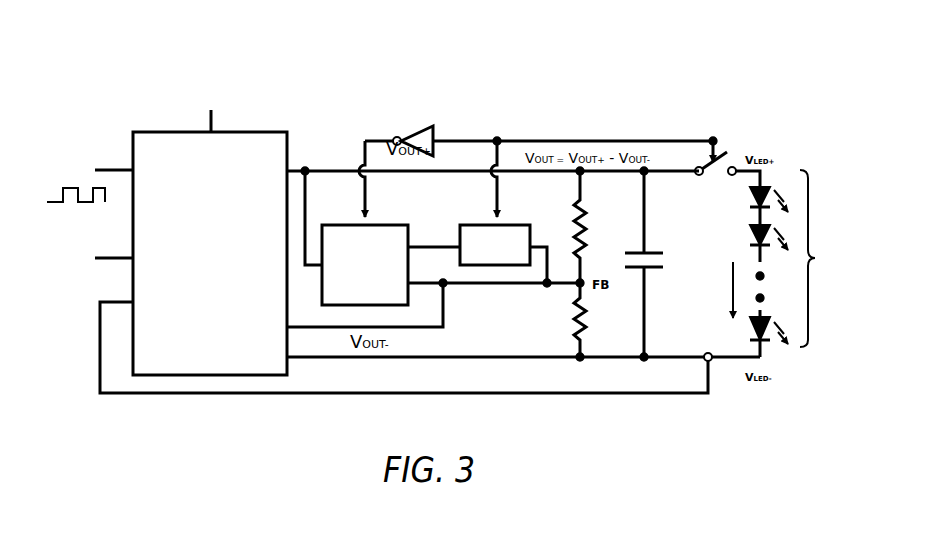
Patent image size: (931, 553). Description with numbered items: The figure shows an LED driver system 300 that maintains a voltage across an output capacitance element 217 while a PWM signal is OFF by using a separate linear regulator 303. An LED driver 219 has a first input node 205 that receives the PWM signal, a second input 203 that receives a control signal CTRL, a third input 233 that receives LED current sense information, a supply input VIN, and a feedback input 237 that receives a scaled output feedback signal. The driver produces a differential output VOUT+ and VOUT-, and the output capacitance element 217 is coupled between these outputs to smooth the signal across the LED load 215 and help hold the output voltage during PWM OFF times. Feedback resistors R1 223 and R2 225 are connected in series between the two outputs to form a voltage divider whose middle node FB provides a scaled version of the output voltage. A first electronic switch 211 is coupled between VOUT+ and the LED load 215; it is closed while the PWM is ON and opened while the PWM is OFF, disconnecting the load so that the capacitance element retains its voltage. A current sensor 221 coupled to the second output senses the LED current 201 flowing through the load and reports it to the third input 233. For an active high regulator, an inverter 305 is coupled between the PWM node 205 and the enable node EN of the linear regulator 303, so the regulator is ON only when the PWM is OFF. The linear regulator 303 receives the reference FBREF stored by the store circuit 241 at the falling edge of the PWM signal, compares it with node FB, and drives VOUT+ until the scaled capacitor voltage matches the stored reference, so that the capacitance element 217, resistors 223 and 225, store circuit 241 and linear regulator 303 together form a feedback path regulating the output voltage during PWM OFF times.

The LED driver system 300 is at (110, 45).
The first input node 205 is at (110, 170).
The second input 203 is at (110, 258).
The third input 233 is at (100, 302).
The LED driver 219 is at (240, 132).
The linear regulator 303 is at (342, 225).
The inverter 305 is at (401, 127).
The store circuit 241 is at (470, 225).
The feedback resistor R1 223 is at (578, 212).
The feedback resistor R2 225 is at (578, 312).
The feedback input FB_INPUT 237 is at (443, 327).
The first electronic switch 211 is at (731, 152).
The LED current i_LED 201 is at (730, 270).
The LED load 215 is at (801, 263).
The output capacitance element 217 is at (652, 270).
The current sensor 221 is at (712, 362).